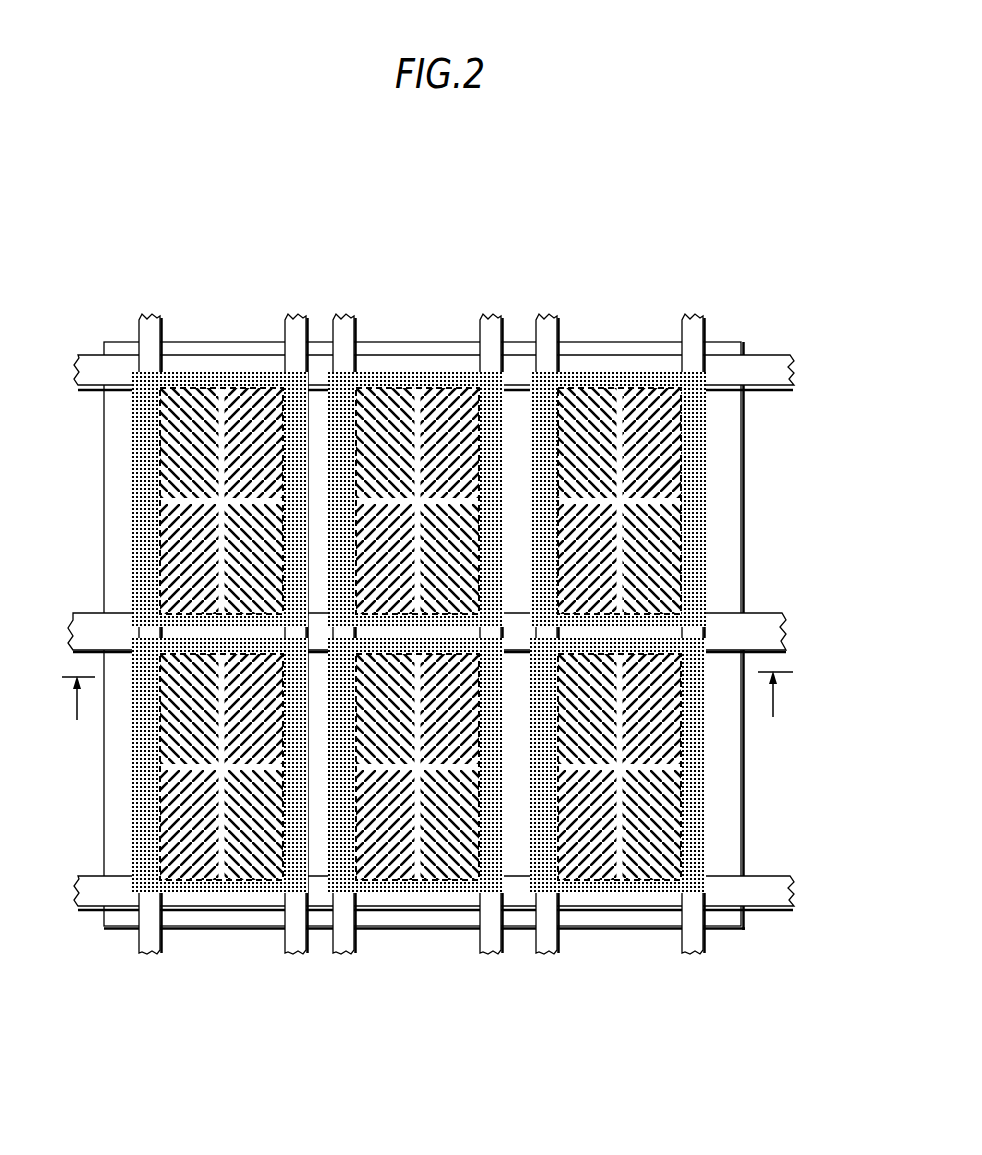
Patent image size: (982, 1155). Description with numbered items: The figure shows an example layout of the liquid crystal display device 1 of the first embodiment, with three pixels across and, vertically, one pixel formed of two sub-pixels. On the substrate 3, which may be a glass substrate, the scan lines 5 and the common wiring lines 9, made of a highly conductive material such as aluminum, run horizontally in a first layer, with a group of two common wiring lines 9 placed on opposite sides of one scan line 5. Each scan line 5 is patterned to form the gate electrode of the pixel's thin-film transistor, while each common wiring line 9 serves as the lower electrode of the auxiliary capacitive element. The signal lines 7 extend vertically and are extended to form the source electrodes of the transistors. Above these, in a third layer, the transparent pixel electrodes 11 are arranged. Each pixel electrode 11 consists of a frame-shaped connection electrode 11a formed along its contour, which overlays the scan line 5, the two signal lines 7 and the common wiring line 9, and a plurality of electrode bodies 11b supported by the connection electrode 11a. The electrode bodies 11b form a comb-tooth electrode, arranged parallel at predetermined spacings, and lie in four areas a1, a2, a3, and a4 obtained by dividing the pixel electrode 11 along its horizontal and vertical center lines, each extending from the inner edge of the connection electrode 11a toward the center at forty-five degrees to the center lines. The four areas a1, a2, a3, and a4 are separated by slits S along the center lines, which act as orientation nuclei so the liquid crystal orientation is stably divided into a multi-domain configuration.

The liquid crystal display device 1 is at (160, 254).
The substrate 3 is at (720, 926).
The scan line 5 is at (786, 632).
The signal line 7 is at (150, 953).
The common wiring line 9 is at (793, 358).
The pixel electrode 11 is at (468, 631).
The connection electrode 11a is at (707, 560).
The electrode body 11b is at (663, 410).
The slit S is at (619, 390).
The area a1 is at (714, 403).
The area a2 is at (660, 577).
The area a3 is at (573, 575).
The area a4 is at (577, 397).